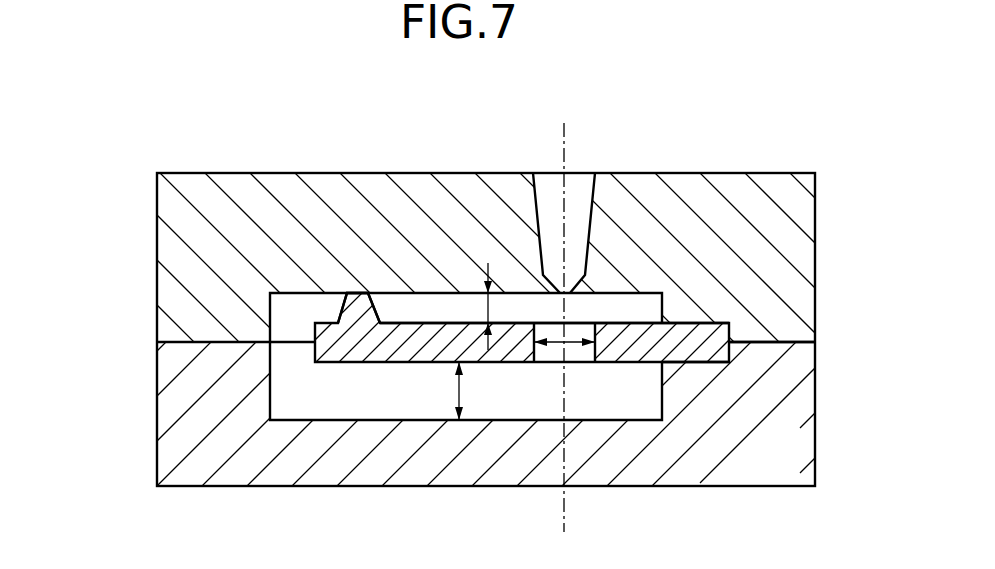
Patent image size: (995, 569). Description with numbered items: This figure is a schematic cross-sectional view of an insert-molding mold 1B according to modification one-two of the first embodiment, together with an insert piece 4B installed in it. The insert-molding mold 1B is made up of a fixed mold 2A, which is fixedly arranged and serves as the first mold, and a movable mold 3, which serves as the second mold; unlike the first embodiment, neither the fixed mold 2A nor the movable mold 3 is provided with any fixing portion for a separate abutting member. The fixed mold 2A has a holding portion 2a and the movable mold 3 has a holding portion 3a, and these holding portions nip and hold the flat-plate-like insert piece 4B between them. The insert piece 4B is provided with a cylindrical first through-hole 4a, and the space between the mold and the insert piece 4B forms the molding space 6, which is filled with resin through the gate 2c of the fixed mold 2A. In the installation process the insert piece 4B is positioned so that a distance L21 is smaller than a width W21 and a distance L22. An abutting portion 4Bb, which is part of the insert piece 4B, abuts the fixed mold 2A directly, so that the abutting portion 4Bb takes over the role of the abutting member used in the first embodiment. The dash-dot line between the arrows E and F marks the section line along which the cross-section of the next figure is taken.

The insert-molding mold 1B is at (70, 242).
The fixed mold 2A is at (178, 257).
The movable mold 3 is at (178, 412).
The molding space 6 is at (664, 390).
The gate 2c is at (538, 212).
The insert piece 4B is at (332, 350).
The abutting portion 4Bb is at (362, 293).
The first through-hole 4a is at (587, 322).
The holding portion 2a is at (730, 341).
The holding portion 3a is at (698, 353).
The distance L21 is at (488, 263).
The distance L22 is at (462, 393).
The width W21 is at (556, 344).
The line E-F end point E is at (567, 142).
The line E-F end point F is at (567, 520).